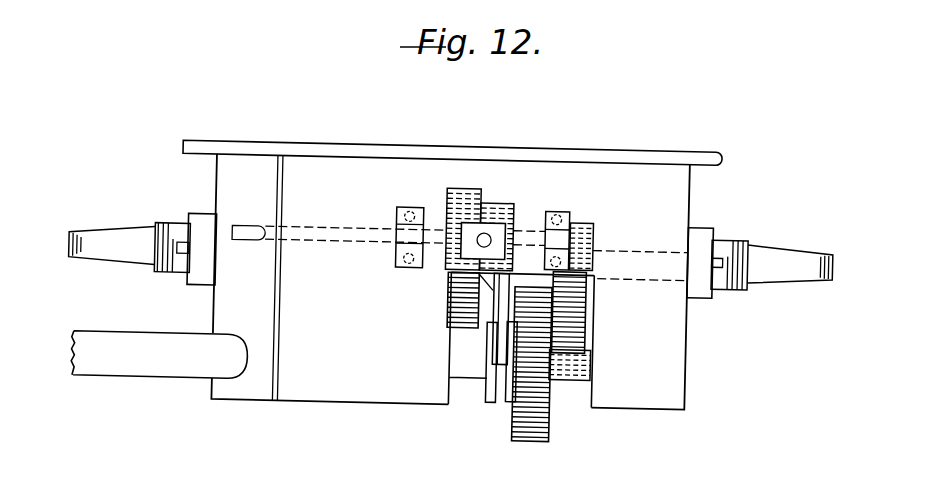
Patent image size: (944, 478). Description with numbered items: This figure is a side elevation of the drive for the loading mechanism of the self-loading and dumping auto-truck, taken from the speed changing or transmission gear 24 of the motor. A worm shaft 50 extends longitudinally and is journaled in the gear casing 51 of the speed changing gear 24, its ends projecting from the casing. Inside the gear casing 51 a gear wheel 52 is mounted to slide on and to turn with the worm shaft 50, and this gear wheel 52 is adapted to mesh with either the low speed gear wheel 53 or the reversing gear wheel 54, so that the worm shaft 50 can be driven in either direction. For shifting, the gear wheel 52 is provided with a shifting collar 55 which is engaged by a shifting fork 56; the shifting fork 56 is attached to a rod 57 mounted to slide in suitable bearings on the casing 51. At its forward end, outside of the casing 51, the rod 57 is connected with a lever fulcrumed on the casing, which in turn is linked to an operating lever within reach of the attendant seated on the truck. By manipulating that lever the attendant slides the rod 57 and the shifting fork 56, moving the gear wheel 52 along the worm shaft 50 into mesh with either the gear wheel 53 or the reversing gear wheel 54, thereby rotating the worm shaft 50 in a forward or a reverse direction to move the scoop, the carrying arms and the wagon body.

The transmission gear 24 is at (760, 251).
The worm shaft 50 is at (159, 355).
The gear casing 51 is at (450, 282).
The gear wheel 52 is at (551, 431).
The low speed gear wheel 53 is at (451, 295).
The reversing gear wheel 54 is at (584, 333).
The shifting collar 55 is at (497, 392).
The shifting fork 56 is at (498, 337).
The rod 57 is at (252, 239).